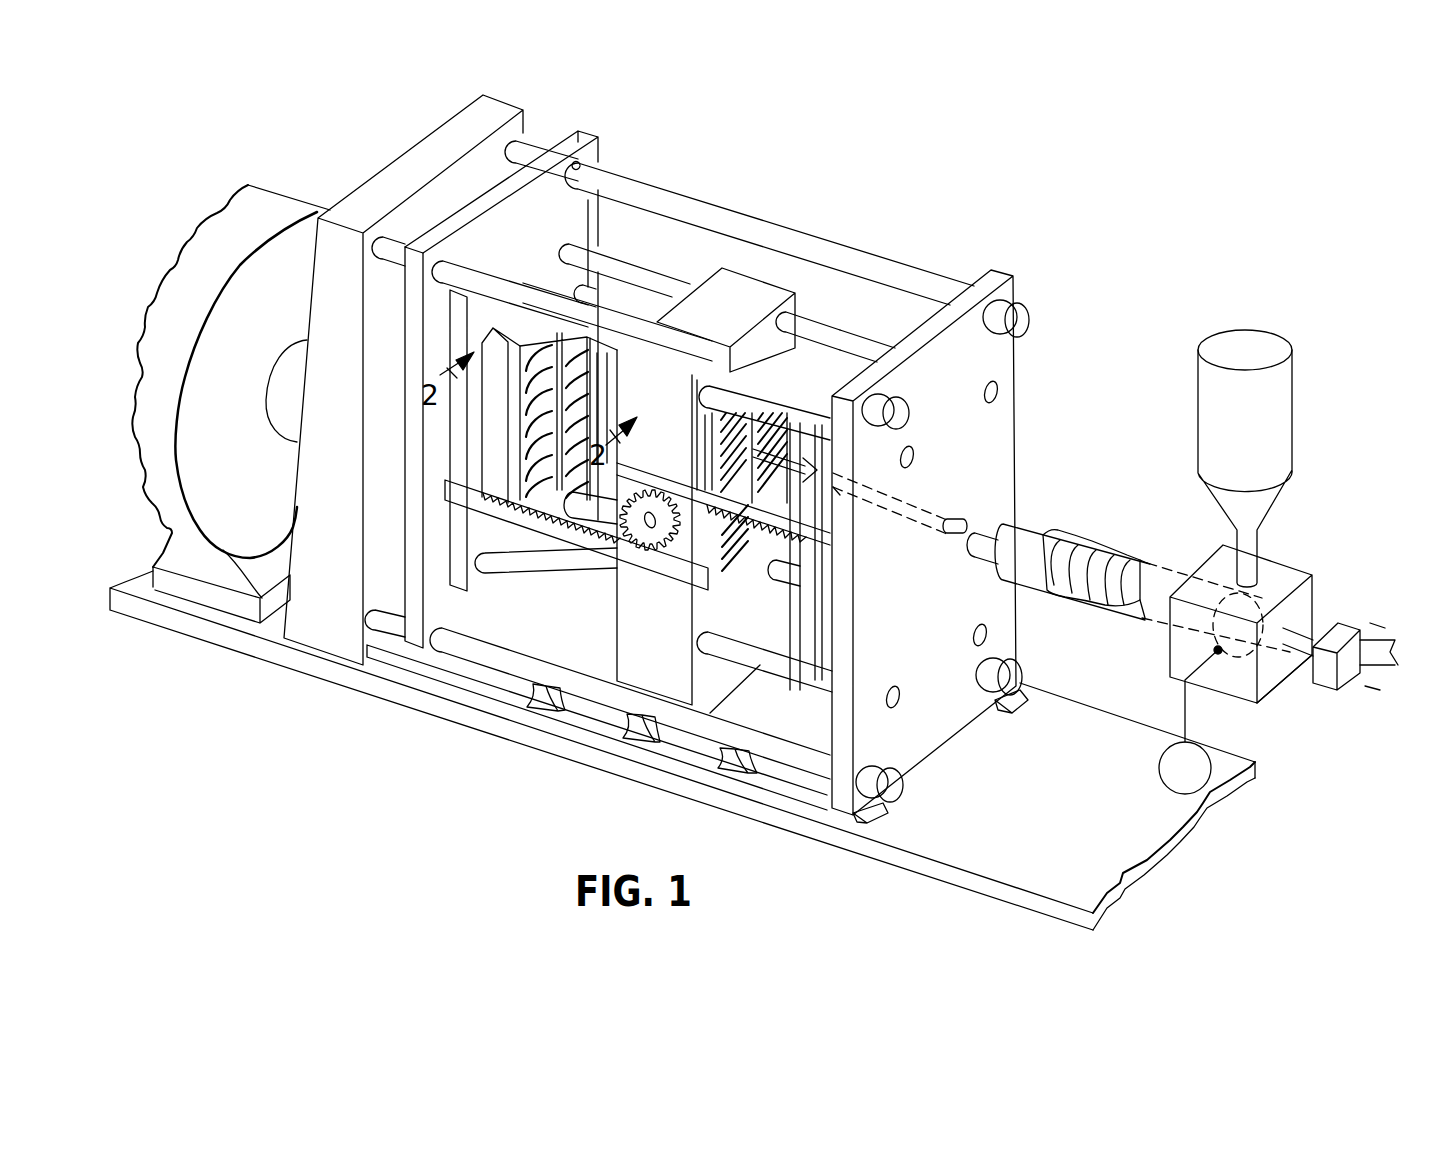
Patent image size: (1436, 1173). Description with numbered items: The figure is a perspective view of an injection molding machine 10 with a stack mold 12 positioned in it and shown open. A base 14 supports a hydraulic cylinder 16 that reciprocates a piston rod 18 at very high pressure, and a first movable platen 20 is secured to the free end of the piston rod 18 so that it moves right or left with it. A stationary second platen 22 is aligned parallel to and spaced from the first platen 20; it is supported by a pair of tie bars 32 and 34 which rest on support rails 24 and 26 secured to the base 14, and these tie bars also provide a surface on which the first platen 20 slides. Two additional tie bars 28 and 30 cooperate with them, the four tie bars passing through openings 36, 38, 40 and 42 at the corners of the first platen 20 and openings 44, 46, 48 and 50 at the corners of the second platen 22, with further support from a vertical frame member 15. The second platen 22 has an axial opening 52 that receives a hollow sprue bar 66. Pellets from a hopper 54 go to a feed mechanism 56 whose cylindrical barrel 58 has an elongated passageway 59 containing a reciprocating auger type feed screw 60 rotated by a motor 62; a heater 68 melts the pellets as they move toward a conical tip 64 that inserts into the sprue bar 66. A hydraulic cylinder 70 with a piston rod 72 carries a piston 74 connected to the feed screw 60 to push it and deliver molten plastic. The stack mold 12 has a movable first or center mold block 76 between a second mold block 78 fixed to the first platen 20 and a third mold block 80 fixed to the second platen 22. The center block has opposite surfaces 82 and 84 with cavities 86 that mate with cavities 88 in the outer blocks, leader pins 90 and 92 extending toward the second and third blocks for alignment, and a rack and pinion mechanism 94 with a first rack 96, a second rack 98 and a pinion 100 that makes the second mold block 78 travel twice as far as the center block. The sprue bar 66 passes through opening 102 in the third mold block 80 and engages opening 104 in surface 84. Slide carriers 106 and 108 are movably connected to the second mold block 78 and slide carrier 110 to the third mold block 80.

The injection molding machine 10 is at (1072, 180).
The stack mold 12 is at (826, 228).
The base 14 is at (338, 682).
The vertical frame member 15 is at (447, 137).
The hydraulic cylinder 16 is at (292, 205).
The piston rod 18 is at (277, 400).
The first movable platen 20 is at (588, 131).
The second platen 22 is at (1012, 272).
The support rail 24 is at (887, 820).
The support rail 26 is at (1033, 707).
The tie bar 28 is at (506, 288).
The tie bar 30 is at (652, 188).
The tie bar 32 is at (487, 657).
The tie bar 34 is at (800, 607).
The opening 36 is at (450, 260).
The opening 38 is at (580, 168).
The opening 40 is at (440, 687).
The opening 42 is at (562, 562).
The opening 44 is at (883, 397).
The opening 46 is at (1020, 295).
The opening 48 is at (867, 767).
The opening 50 is at (977, 663).
The axial opening 52 is at (920, 497).
The hopper 54 is at (1280, 397).
The feed mechanism 56 is at (1287, 563).
The cylindrical barrel 58 is at (1033, 532).
The elongated passageway 59 is at (1137, 563).
The feed screw 60 is at (1072, 580).
The motor 62 is at (1205, 757).
The conical tip 64 is at (977, 540).
The sprue bar 66 is at (953, 540).
The heater 68 is at (1080, 540).
The hydraulic cylinder 70 is at (1367, 637).
The piston rod 72 is at (1320, 640).
The piston 74 is at (1270, 687).
The first mold block 76 is at (736, 328).
The second mold block 78 is at (540, 238).
The third mold block 80 is at (827, 625).
The surface 82 is at (667, 300).
The surface 84 is at (790, 310).
The cavities 86 is at (730, 528).
The cavities 88 is at (573, 385).
The leader pins 90 is at (620, 263).
The leader pins 92 is at (860, 343).
The rack and pinion mechanism 94 is at (643, 578).
The first rack 96 is at (637, 480).
The second rack 98 is at (677, 573).
The pinion 100 is at (695, 540).
The opening 102 is at (880, 490).
The opening 104 is at (753, 454).
The slide carrier 106 is at (488, 443).
The slide carrier 108 is at (580, 283).
The slide carrier 110 is at (764, 669).